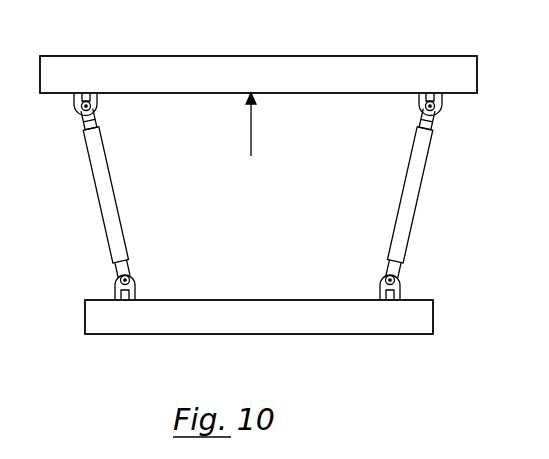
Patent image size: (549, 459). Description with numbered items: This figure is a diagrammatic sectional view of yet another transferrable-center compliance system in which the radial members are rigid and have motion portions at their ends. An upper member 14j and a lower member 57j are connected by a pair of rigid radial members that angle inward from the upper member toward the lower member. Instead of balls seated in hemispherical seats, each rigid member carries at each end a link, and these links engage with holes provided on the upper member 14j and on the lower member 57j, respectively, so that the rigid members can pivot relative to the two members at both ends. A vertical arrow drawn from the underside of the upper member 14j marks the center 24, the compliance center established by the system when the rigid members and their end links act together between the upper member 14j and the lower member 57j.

The member 14j is at (331, 56).
The member 57j is at (265, 299).
The center 24 is at (258, 132).